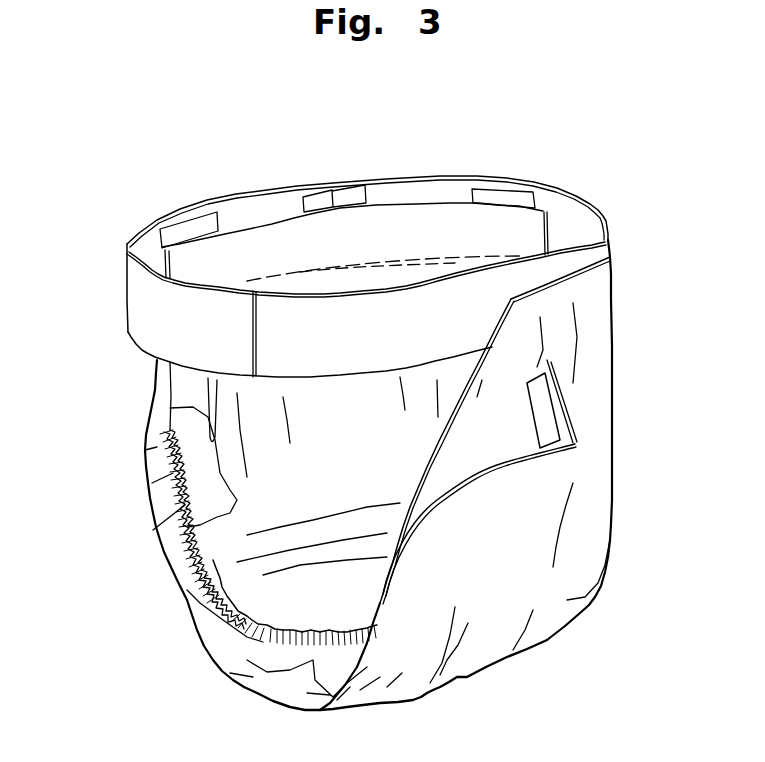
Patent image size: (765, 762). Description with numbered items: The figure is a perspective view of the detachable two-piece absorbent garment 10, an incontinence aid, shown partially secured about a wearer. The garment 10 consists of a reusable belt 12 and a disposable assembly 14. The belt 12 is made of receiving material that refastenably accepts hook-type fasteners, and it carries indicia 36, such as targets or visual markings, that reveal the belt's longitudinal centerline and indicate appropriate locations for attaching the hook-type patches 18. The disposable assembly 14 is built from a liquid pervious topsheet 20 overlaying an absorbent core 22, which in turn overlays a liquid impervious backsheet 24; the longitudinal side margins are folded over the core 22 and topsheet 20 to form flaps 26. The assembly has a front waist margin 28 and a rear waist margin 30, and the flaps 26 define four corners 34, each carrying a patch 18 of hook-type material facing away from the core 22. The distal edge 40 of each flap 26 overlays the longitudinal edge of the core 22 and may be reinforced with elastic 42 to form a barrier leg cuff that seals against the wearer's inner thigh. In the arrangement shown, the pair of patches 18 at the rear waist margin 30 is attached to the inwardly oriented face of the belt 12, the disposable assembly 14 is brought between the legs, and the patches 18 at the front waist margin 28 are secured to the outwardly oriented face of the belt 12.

The absorbent garment 10 is at (213, 703).
The reusable belt 12 is at (124, 288).
The disposable assembly 14 is at (436, 693).
The patches 18 is at (552, 408).
The topsheet 20 is at (355, 499).
The absorbent core 22 is at (221, 499).
The backsheet 24 is at (570, 597).
The flaps 26 is at (217, 640).
The front waist margin 28 is at (528, 351).
The rear waist margin 30 is at (273, 247).
The corners 34 is at (575, 443).
The indicia 36 is at (185, 232).
The distal edge 40 is at (156, 367).
The elastic 42 is at (183, 547).